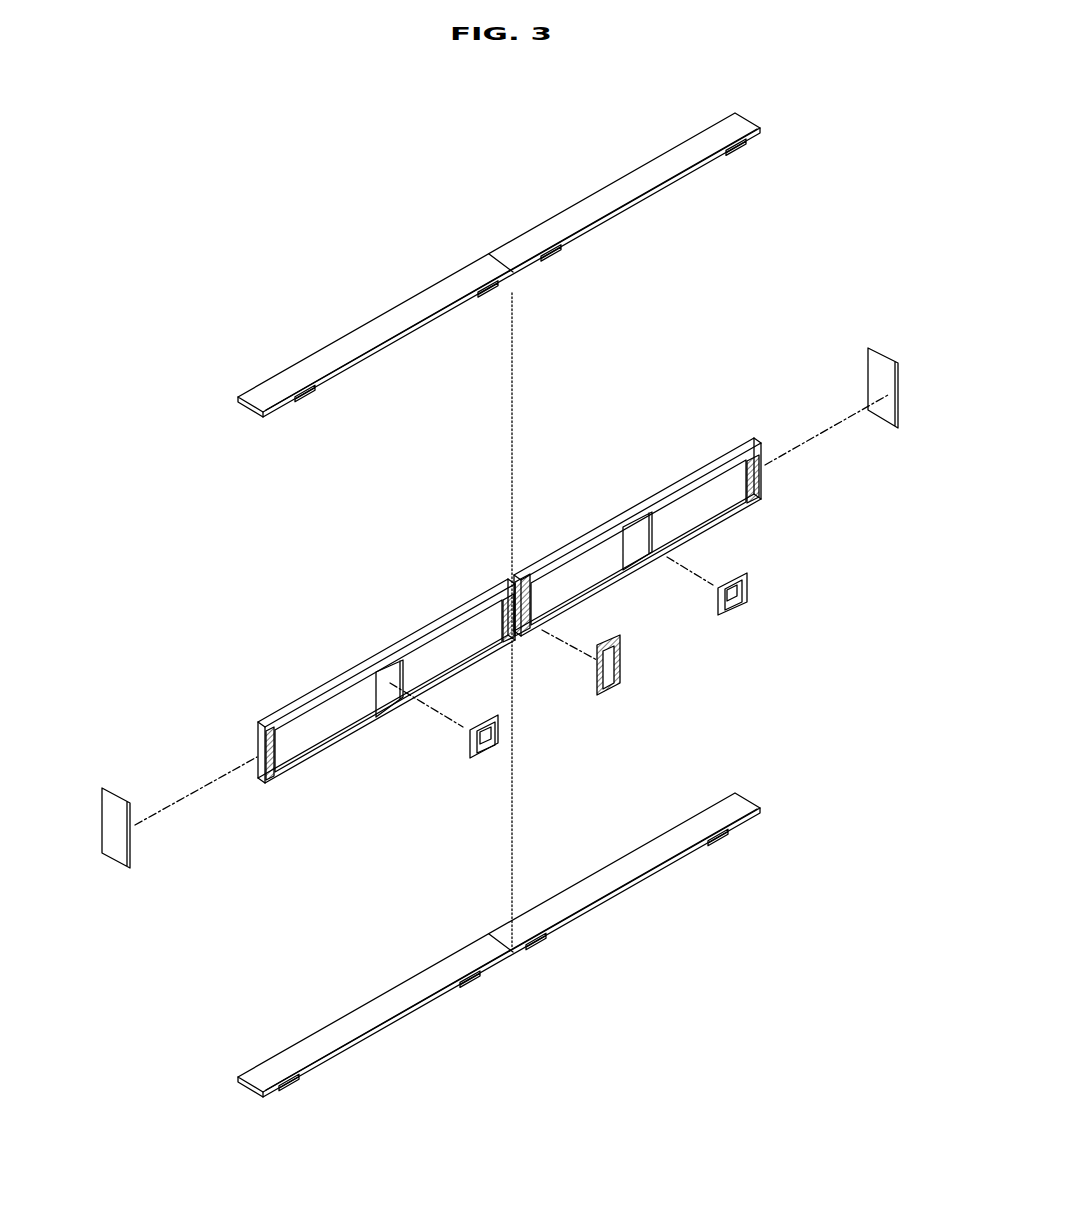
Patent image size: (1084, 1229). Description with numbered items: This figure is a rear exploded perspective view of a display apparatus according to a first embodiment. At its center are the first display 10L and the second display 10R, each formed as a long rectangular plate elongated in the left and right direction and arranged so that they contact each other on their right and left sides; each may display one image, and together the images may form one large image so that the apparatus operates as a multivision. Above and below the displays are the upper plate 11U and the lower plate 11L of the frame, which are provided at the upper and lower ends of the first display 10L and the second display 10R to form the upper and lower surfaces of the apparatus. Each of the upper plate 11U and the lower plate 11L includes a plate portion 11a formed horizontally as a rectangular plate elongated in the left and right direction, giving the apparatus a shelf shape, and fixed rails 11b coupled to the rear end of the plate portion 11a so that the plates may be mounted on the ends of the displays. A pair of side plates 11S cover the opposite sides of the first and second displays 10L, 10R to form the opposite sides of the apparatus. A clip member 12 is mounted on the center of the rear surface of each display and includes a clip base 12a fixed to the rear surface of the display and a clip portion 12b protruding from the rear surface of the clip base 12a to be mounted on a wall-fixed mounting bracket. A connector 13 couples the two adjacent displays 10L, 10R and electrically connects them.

The second display 10R is at (411, 603).
The first display 10L is at (641, 476).
The upper plate 11U is at (493, 251).
The lower plate 11L is at (438, 1000).
The side plate 11S is at (872, 348).
The plate portion 11a is at (636, 190).
The fixed rail 11b is at (745, 150).
The clip member 12 is at (611, 670).
The clip base 12a is at (735, 608).
The clip portion 12b is at (755, 595).
The connector 13 is at (622, 672).